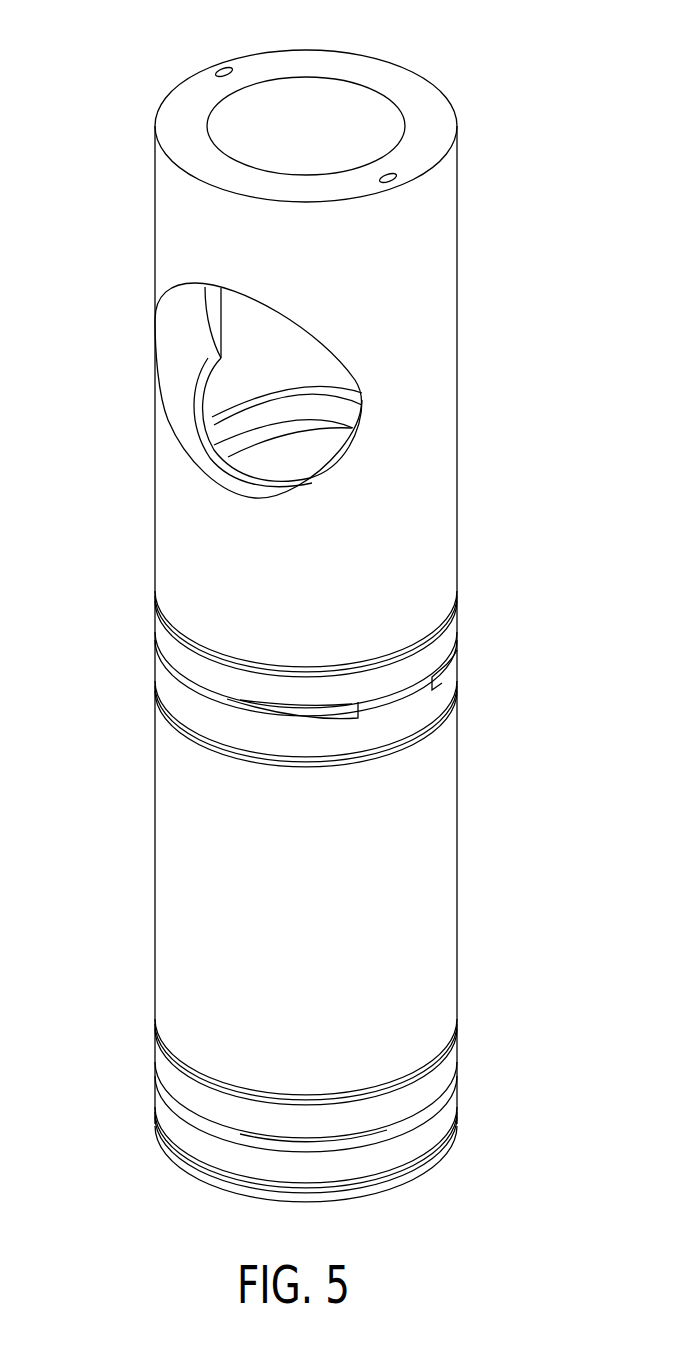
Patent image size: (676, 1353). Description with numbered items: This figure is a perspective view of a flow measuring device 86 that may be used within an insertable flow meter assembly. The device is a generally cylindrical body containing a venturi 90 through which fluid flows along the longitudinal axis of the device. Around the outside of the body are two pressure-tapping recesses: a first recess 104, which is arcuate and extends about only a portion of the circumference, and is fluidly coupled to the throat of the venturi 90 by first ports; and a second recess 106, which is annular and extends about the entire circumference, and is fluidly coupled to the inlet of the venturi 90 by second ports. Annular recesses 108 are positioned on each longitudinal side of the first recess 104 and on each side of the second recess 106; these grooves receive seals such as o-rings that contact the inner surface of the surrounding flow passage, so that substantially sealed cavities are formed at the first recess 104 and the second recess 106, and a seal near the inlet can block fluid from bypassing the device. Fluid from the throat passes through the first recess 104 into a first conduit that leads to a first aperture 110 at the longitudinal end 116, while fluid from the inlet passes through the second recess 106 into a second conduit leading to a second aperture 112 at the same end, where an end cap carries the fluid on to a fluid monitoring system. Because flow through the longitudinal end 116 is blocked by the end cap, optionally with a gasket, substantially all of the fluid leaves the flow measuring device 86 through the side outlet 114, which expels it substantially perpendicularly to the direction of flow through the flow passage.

The flow measuring device 86 is at (458, 358).
The venturi 90 is at (430, 845).
The first recess 104 is at (437, 672).
The second recess 106 is at (438, 1097).
The annular recesses 108 is at (368, 661).
The first aperture 110 is at (220, 68).
The second aperture 112 is at (394, 182).
The outlet 114 is at (182, 402).
The longitudinal end 116 is at (328, 113).